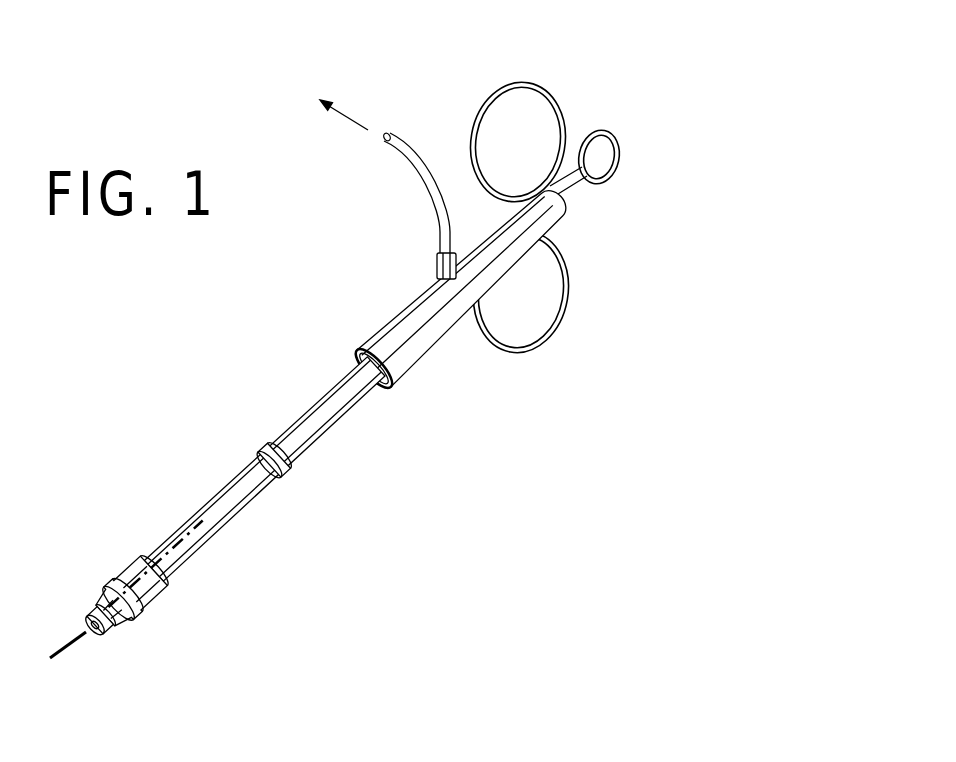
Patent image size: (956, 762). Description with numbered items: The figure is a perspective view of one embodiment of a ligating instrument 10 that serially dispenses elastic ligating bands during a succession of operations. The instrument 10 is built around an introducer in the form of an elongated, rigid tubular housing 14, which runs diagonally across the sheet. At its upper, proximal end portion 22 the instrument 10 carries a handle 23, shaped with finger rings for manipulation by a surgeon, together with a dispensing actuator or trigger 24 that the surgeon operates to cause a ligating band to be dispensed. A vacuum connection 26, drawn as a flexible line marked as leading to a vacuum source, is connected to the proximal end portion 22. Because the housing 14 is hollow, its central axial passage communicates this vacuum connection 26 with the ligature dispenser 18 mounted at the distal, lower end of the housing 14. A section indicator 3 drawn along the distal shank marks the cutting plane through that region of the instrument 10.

The ligating instrument 10 is at (378, 424).
The tubular housing 14 is at (298, 428).
The ligature dispenser 18 is at (180, 597).
The proximal end portion 22 is at (616, 266).
The handle 23 is at (514, 84).
The dispensing actuator or trigger 24 is at (615, 147).
The vacuum connection 26 is at (425, 183).
The section line 3- 3 is at (220, 544).